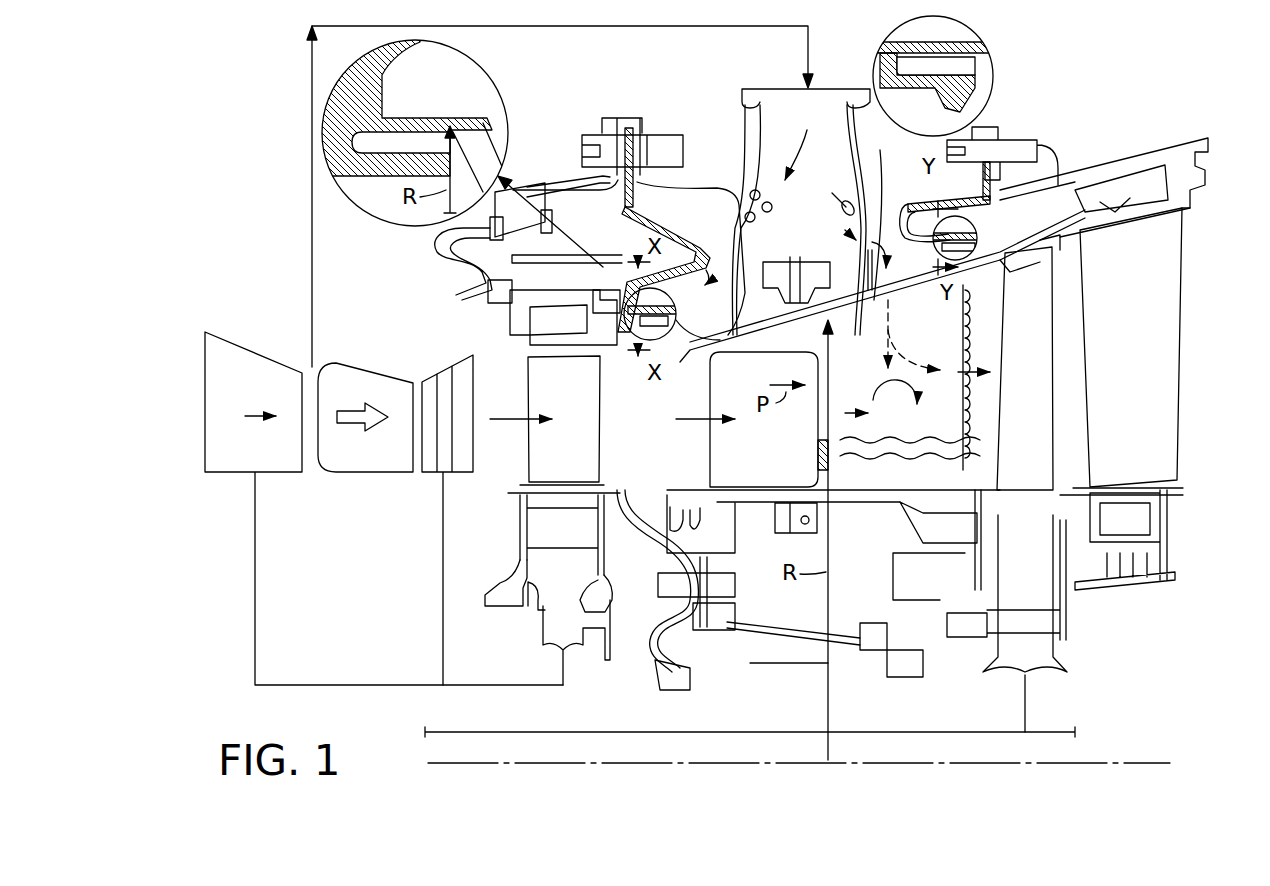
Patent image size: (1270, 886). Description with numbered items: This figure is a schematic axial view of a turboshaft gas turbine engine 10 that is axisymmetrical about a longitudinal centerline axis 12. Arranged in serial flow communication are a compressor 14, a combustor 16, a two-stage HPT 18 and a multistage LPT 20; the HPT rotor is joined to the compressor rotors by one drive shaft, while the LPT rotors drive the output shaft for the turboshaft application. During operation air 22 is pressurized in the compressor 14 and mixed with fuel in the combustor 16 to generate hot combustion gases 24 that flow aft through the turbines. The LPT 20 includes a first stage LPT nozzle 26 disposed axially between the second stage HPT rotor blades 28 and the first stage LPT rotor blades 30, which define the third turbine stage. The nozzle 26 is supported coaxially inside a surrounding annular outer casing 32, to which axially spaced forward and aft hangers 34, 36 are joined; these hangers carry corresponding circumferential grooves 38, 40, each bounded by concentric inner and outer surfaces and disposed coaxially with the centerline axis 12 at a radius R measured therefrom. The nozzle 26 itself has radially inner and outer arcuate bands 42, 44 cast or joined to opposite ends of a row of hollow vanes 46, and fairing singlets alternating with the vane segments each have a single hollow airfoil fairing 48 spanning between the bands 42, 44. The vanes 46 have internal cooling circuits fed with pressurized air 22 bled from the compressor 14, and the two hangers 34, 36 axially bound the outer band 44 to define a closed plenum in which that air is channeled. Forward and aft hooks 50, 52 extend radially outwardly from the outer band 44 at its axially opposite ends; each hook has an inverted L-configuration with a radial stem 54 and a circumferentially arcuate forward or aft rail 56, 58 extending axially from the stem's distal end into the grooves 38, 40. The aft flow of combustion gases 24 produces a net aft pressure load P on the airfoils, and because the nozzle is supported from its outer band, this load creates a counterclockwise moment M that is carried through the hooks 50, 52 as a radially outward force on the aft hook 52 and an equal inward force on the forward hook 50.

The turboshaft gas turbine engine 10 is at (535, 60).
The centerline axis 12 is at (477, 763).
The compressor 14 is at (266, 456).
The combustor 16 is at (382, 459).
The two-stage HPT 18 is at (516, 392).
The multistage LPT 20 is at (1070, 310).
The air 22 is at (662, 28).
The combustion gases 24 is at (350, 407).
The first stage LPT nozzle 26 is at (778, 84).
The second stage HPT rotor blades 28 is at (574, 451).
The first stage LPT rotor blades 30 is at (1041, 461).
The outer casing 32 is at (693, 175).
The forward hanger 34 is at (668, 226).
The aft hanger 36 is at (895, 232).
The groove 38 is at (362, 142).
The groove 40 is at (888, 54).
The inner band 42 is at (768, 487).
The outer band 44 is at (772, 336).
The vanes 46 is at (940, 338).
The hollow airfoil fairing 48 is at (750, 473).
The forward hook 50 is at (676, 312).
The aft hook 52 is at (995, 255).
The radial stem 54 is at (490, 150).
The forward rail 56 is at (425, 142).
The aft rail 58 is at (972, 80).